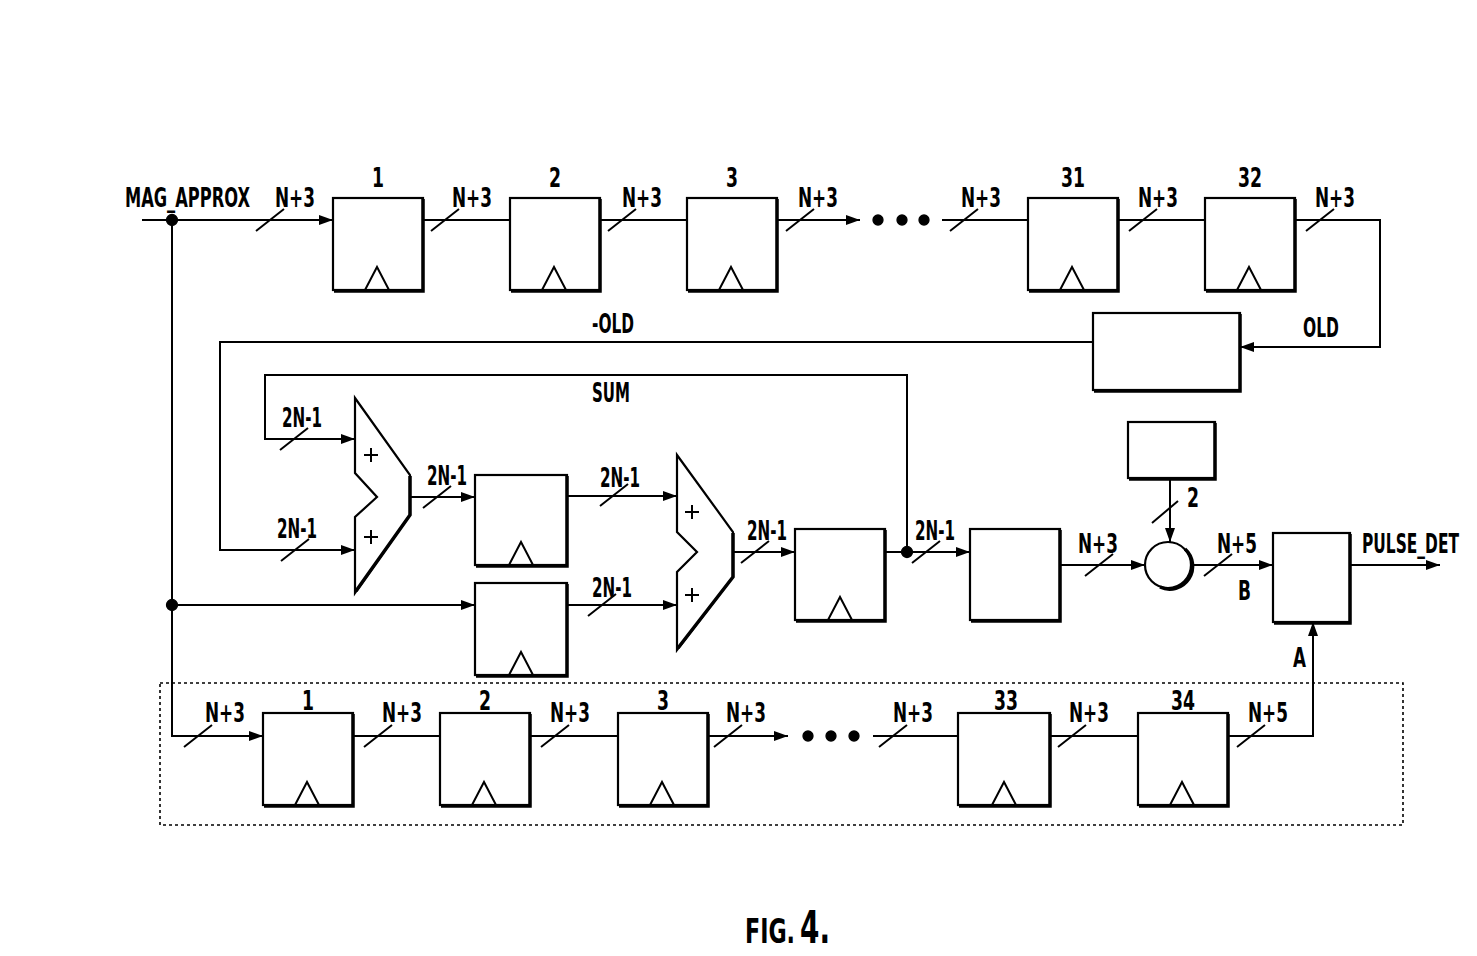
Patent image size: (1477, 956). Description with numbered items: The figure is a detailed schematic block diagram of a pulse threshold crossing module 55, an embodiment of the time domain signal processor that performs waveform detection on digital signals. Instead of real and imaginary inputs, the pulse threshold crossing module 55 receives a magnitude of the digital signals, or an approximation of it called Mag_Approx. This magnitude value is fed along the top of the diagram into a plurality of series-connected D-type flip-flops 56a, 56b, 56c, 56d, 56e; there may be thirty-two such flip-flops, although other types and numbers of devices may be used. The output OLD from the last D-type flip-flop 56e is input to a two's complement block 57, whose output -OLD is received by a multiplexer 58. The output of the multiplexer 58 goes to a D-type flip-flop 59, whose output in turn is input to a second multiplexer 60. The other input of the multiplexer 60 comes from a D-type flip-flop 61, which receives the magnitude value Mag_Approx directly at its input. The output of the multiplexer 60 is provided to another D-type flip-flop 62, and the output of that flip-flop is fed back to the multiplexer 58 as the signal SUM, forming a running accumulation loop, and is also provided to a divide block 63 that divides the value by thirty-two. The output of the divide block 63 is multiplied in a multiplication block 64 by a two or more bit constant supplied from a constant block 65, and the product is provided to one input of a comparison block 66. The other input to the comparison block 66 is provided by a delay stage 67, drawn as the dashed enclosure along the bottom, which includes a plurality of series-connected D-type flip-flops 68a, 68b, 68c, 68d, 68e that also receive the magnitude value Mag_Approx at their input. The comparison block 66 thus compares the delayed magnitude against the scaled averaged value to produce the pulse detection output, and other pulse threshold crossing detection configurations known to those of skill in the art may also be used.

The pulse threshold crossing module 55 is at (1210, 128).
The D-type flip-flop 56a is at (411, 198).
The D-type flip-flop 56b is at (589, 198).
The D-type flip-flop 56c is at (768, 198).
The D-type flip-flop 56d is at (1118, 198).
The D-type flip-flop 56e is at (1297, 198).
The two's complement block 57 is at (1093, 371).
The multiplexer 58 is at (390, 443).
The D-type flip-flop 59 is at (525, 475).
The multiplexer 60 is at (707, 493).
The D-type flip-flop 61 is at (475, 588).
The D-type flip-flop 62 is at (838, 529).
The divide block 63 is at (1021, 529).
The multiplication block 64 is at (1184, 589).
The constant block 65 is at (1208, 422).
The comparison block 66 is at (1335, 533).
The delay stage 67 is at (411, 832).
The D-type flip-flop 68a is at (263, 797).
The D-type flip-flop 68b is at (517, 806).
The D-type flip-flop 68c is at (636, 806).
The D-type flip-flop 68d is at (1043, 806).
The D-type flip-flop 68e is at (1228, 806).